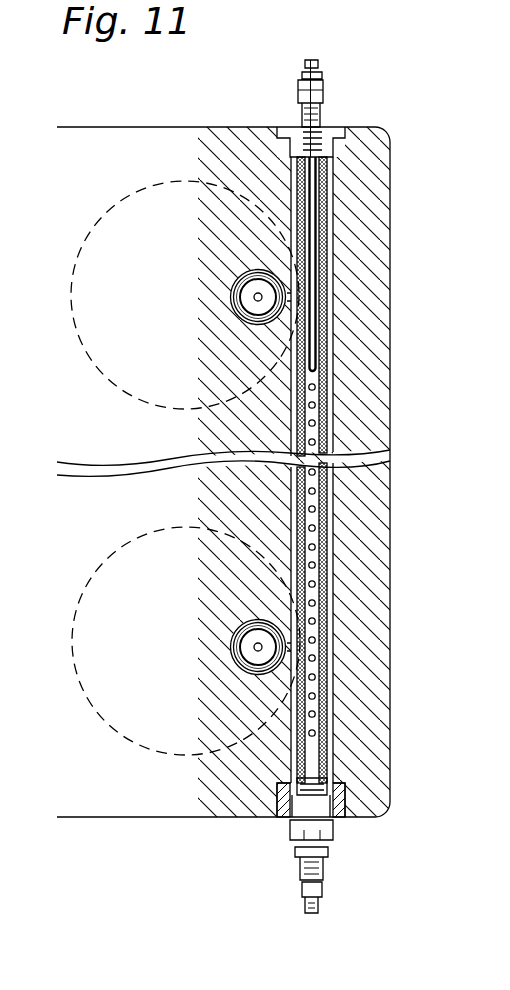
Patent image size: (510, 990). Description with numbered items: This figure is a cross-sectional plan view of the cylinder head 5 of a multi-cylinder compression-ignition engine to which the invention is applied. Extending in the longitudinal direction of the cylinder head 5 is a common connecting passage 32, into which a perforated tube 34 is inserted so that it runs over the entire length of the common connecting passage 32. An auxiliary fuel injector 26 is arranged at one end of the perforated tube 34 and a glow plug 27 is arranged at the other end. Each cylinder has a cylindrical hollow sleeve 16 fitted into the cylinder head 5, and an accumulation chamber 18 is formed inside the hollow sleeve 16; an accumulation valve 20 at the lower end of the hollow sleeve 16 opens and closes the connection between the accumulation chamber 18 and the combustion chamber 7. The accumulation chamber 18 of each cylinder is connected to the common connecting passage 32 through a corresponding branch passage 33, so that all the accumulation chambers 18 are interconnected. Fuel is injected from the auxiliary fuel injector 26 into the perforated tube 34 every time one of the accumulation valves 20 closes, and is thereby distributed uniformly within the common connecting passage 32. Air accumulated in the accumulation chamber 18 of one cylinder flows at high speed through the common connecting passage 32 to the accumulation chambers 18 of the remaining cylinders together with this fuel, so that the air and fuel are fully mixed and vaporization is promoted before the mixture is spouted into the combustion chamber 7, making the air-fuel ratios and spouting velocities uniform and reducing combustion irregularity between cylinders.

The cylinder head 5 is at (382, 175).
The combustion chamber 7 is at (112, 372).
The cylindrical hollow sleeve 16 is at (241, 280).
The accumulation chamber 18 is at (254, 297).
The accumulation valve 20 is at (278, 316).
The auxiliary fuel injector 26 is at (322, 874).
The glow plug 27 is at (300, 95).
The common connecting passage 32 is at (330, 372).
The branch passage 33 is at (291, 353).
The perforated tube 34 is at (325, 650).